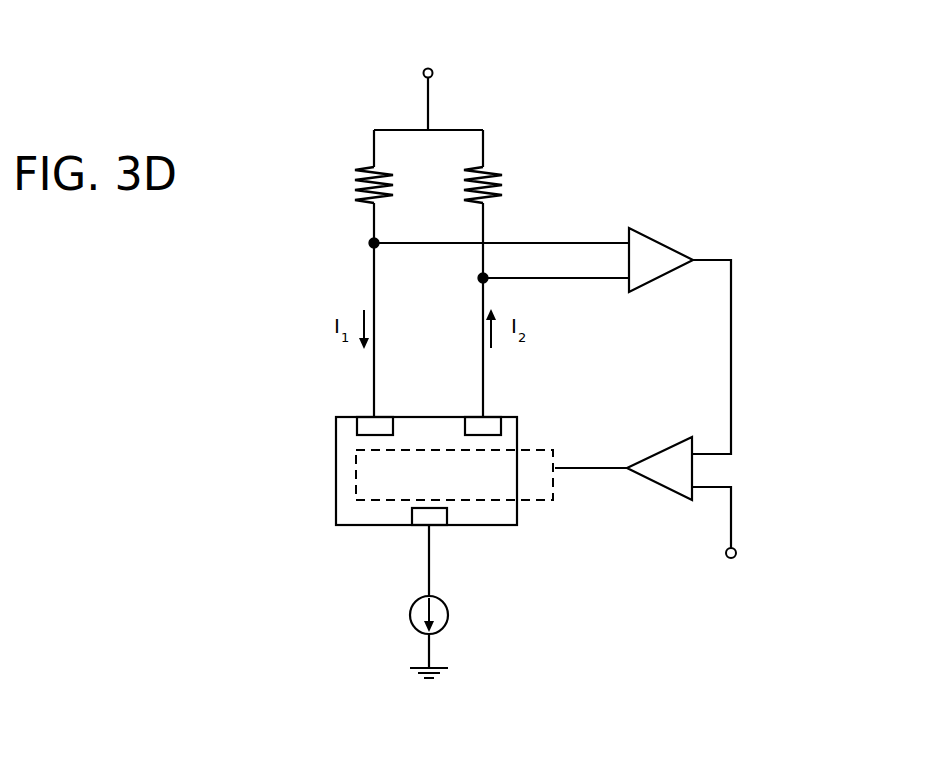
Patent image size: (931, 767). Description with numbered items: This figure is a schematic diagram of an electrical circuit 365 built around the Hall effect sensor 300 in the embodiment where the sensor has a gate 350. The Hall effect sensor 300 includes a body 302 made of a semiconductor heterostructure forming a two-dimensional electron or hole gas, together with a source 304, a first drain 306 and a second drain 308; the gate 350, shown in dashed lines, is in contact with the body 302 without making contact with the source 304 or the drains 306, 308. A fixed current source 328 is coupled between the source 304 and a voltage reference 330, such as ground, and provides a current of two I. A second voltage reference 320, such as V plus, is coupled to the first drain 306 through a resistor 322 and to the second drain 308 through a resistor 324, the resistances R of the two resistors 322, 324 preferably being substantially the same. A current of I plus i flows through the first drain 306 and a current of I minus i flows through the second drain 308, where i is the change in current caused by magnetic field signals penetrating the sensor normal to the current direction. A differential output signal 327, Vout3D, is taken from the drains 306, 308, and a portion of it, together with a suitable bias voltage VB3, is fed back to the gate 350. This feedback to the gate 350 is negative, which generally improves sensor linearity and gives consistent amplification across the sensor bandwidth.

The Hall effect sensor 300 is at (401, 470).
The body 302 is at (336, 504).
The source 304 is at (430, 515).
The first drain 306 is at (378, 426).
The second drain 308 is at (480, 426).
The voltage reference 320 is at (433, 72).
The resistor 322 is at (355, 176).
The resistor 324 is at (502, 178).
The differential output signal 327 is at (682, 328).
The fixed current source 328 is at (410, 612).
The voltage reference 330 is at (448, 672).
The gate 350 is at (557, 452).
The electrical circuit 365 is at (742, 121).